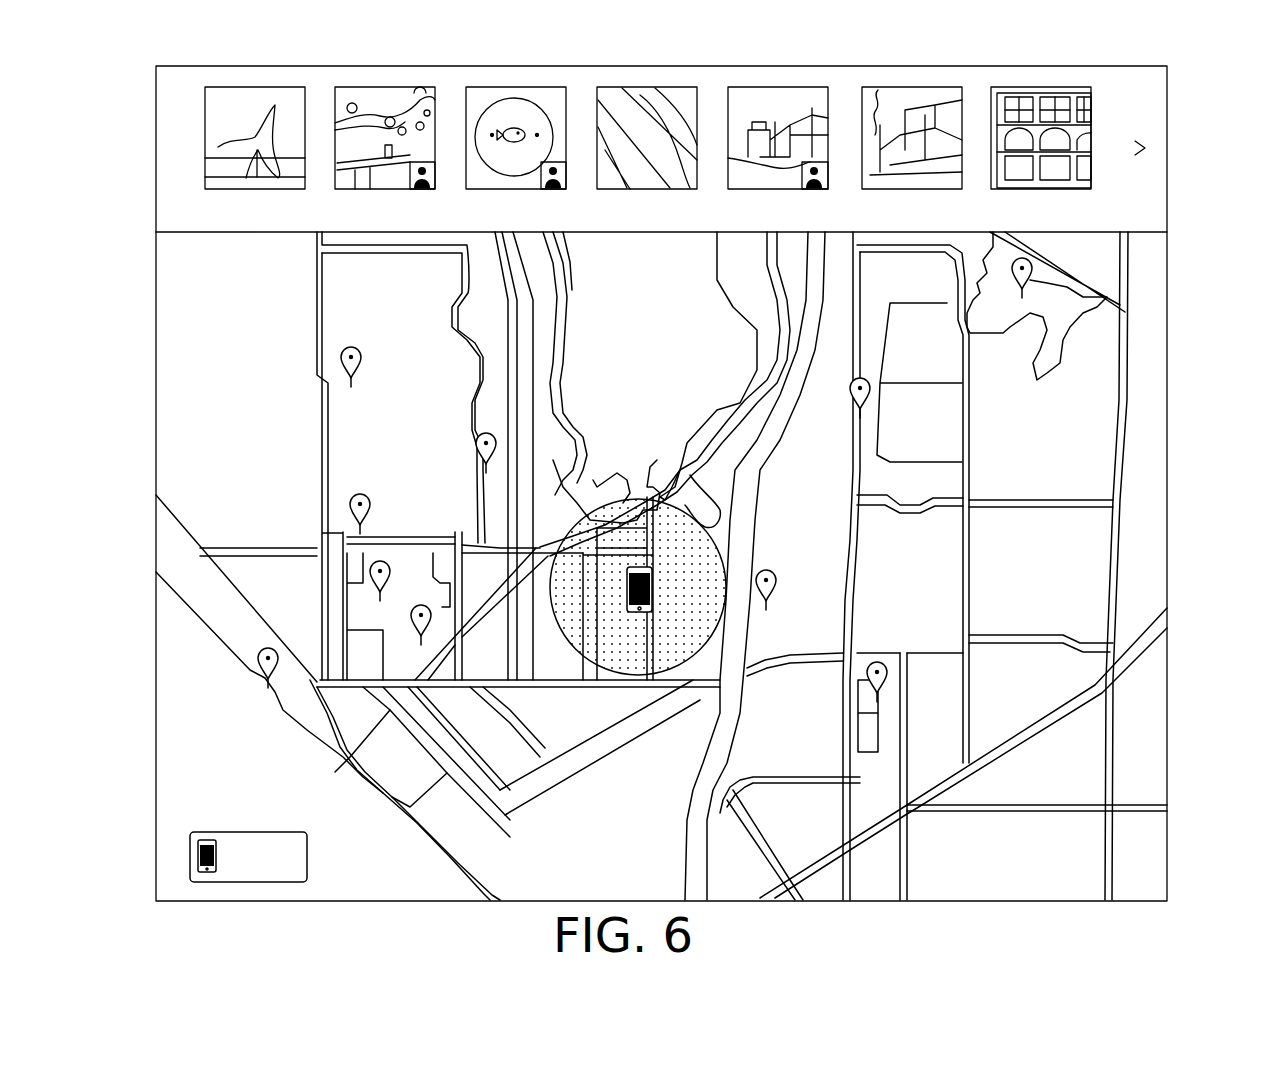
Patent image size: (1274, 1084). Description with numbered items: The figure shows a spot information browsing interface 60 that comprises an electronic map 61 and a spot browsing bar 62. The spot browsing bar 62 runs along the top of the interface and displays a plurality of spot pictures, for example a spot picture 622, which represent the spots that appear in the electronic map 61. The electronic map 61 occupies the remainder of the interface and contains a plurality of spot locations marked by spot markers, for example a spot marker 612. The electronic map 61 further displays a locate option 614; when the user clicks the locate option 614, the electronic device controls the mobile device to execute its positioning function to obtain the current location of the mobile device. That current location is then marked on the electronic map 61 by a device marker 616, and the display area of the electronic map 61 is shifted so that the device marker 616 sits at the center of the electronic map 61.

The spot information browsing interface 60 is at (1167, 122).
The electronic map 61 is at (666, 566).
The spot browsing bar 62 is at (671, 149).
The spot marker 612 is at (770, 571).
The locate option 614 is at (190, 860).
The device marker 616 is at (627, 613).
The spot picture 622 is at (357, 87).